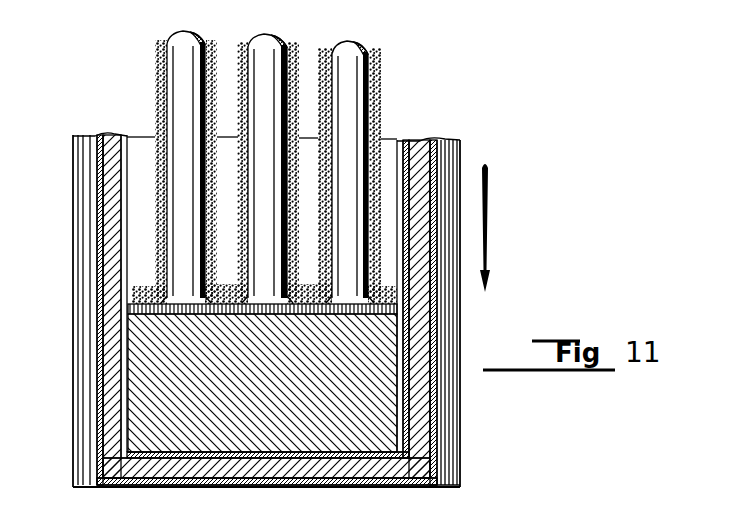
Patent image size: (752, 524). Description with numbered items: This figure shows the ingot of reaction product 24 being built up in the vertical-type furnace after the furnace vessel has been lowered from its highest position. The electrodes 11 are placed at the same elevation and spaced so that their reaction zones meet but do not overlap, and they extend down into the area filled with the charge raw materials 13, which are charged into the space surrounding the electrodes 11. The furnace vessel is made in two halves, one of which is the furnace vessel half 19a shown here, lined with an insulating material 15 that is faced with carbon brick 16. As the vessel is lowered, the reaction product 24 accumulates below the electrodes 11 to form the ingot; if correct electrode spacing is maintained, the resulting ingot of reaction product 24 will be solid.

The electrodes 11 is at (166, 45).
The charge raw materials 13 is at (137, 292).
The insulating material 15 is at (108, 205).
The carbon brick 16 is at (122, 422).
The furnace vessel half 19a is at (97, 369).
The reaction product 24 is at (246, 444).